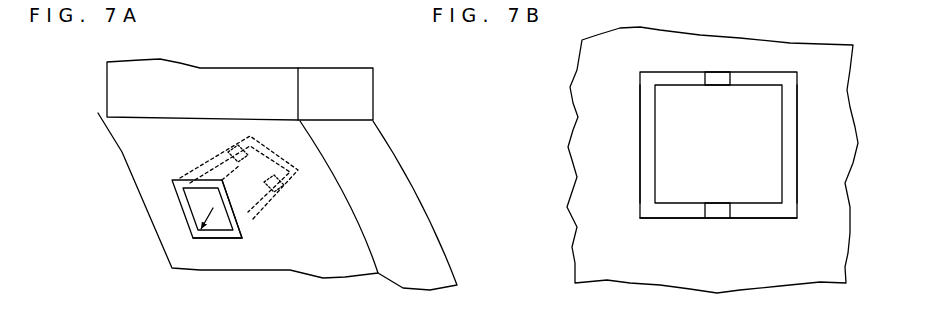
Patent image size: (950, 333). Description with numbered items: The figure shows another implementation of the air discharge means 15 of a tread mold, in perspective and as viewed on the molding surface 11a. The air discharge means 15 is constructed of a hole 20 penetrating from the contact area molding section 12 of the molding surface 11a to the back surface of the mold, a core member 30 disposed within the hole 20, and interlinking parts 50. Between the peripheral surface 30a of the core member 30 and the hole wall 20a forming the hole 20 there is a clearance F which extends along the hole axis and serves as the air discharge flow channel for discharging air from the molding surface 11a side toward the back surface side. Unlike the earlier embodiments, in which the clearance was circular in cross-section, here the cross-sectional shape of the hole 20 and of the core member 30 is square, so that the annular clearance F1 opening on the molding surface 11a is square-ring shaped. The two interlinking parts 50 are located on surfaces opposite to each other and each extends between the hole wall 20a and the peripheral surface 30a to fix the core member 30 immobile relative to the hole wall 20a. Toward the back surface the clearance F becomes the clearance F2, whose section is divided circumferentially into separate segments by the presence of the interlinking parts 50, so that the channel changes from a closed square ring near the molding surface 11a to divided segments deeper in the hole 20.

In FIG. 7A, the contact area molding section 12 is at (147, 162).
In FIG. 7B, the molding surface 11a is at (815, 62).
In FIG. 7A, the air discharge means 15 is at (180, 212).
In FIG. 7B, the air discharge means 15 is at (638, 125).
In FIG. 7A, the core member 30 is at (196, 233).
In FIG. 7B, the core member 30 is at (672, 183).
In FIG. 7B, the peripheral surface 30a is at (642, 164).
In FIG. 7A, the hole 20 is at (236, 244).
In FIG. 7B, the hole 20 is at (777, 215).
In FIG. 7B, the hole wall 20a is at (702, 212).
In FIG. 7A, the interlinking part 50 is at (248, 153).
In FIG. 7B, the interlinking part 50 is at (718, 73).
In FIG. 7A, the clearance F is at (178, 190).
In FIG. 7A, the annular clearance F1 is at (224, 232).
In FIG. 7B, the annular clearance F1 is at (642, 200).
In FIG. 7A, the annular clearance F2 is at (222, 148).
In FIG. 7B, the annular clearance F2 is at (650, 125).